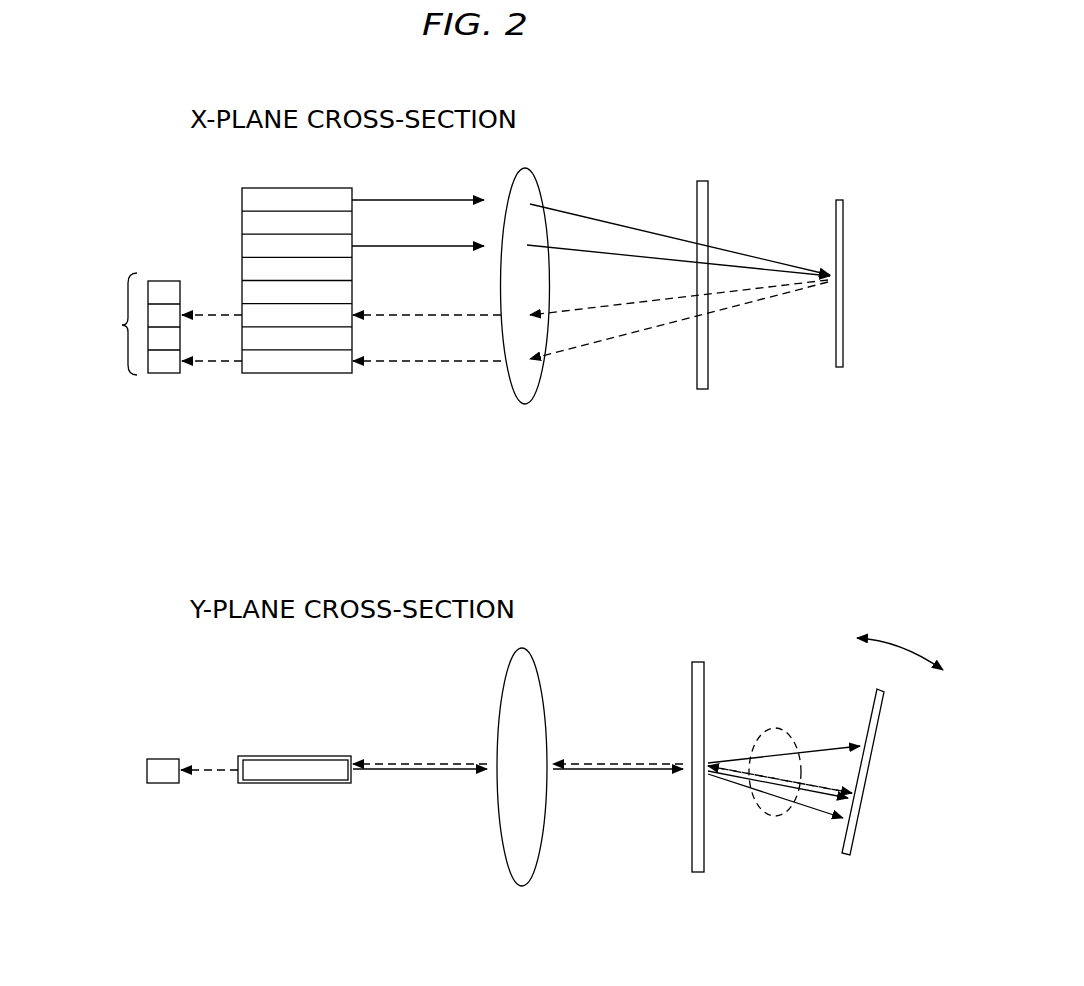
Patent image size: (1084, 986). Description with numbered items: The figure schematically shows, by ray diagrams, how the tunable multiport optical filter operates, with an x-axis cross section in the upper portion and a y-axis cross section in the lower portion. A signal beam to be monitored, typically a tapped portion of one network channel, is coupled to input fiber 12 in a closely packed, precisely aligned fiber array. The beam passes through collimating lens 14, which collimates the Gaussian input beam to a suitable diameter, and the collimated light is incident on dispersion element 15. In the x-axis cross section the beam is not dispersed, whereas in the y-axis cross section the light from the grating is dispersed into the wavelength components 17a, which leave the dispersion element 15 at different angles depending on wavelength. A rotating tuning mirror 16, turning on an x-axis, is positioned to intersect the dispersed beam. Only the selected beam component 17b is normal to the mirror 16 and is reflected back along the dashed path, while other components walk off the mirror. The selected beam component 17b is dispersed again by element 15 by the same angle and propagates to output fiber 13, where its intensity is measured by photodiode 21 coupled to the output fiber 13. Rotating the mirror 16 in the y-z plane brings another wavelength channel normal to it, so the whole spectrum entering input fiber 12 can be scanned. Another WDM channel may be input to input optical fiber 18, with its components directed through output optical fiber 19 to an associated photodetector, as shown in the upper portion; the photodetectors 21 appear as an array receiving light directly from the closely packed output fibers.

The input fiber 12 is at (293, 187).
The output fiber 13 is at (313, 373).
The collimating lens 14 is at (537, 180).
The dispersion element 15 is at (703, 180).
The tuning mirror 16 is at (837, 198).
The wavelength components 17a is at (758, 738).
The selected beam component 17b is at (826, 797).
The input optical fiber 18 is at (353, 236).
The output optical fiber 19 is at (352, 312).
The photodiode 21 is at (147, 768).